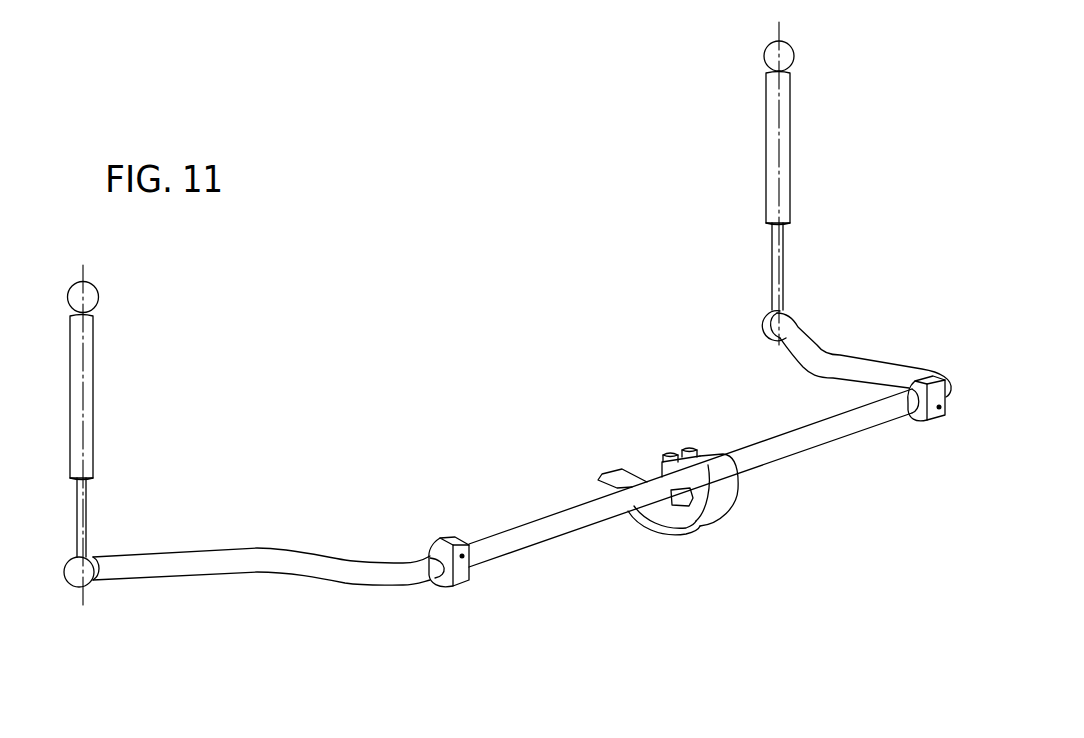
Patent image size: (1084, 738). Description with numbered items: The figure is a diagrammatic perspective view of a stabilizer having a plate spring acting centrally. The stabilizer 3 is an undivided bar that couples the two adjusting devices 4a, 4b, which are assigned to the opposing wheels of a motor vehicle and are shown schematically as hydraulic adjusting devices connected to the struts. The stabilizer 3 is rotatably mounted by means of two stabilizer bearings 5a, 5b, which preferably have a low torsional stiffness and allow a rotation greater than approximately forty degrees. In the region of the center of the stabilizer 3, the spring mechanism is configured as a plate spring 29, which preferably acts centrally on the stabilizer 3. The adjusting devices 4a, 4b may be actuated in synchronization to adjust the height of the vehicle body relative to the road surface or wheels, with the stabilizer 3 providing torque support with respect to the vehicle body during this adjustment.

The stabilizer 3 is at (791, 448).
The adjusting device 4a is at (89, 384).
The adjusting device 4b is at (785, 140).
The stabilizer bearing 5a is at (462, 545).
The stabilizer bearing 5b is at (937, 417).
The plate spring 29 is at (720, 503).